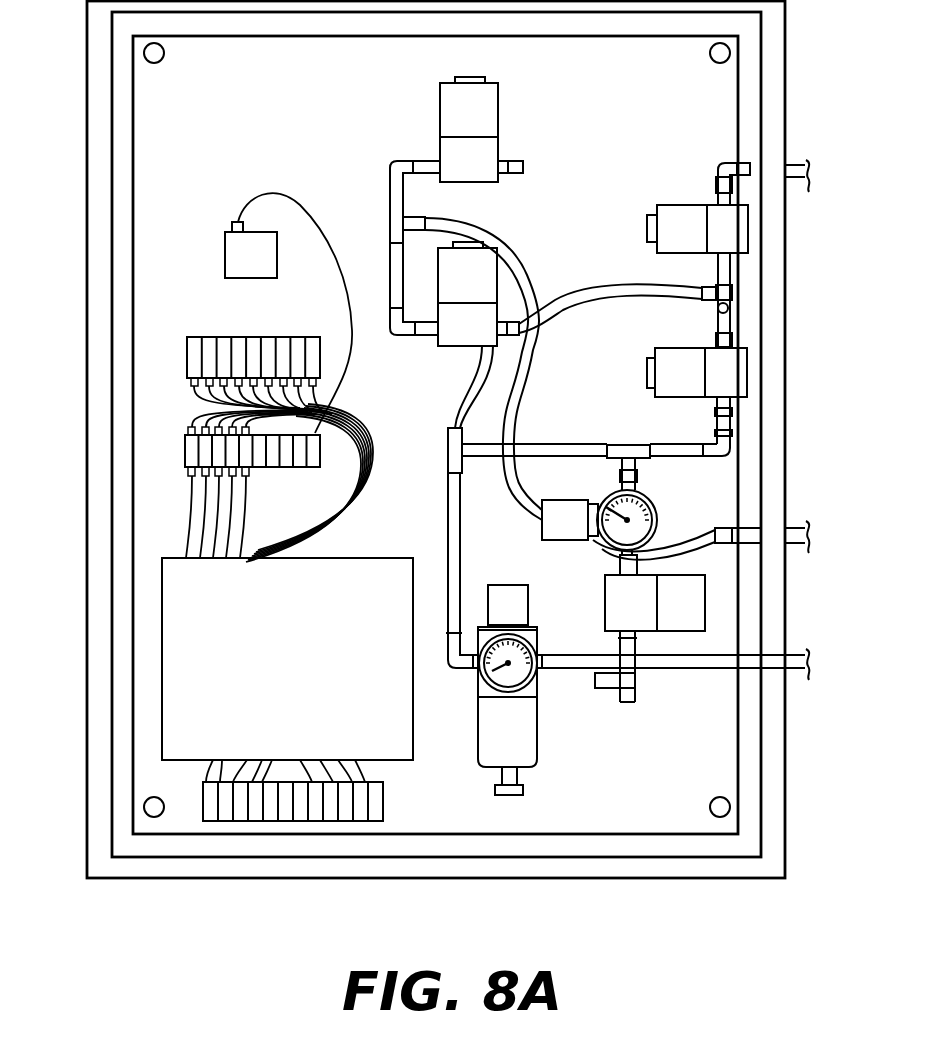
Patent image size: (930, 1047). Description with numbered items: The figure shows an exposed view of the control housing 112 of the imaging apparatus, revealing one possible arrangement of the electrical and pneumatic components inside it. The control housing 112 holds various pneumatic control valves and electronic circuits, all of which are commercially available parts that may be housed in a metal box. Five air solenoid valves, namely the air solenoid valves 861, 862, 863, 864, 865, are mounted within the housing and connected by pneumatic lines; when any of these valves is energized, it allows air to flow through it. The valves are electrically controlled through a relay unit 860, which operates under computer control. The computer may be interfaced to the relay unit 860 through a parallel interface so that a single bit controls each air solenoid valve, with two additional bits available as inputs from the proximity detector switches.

The control housing 112 is at (227, 914).
The relay unit 860 is at (160, 631).
The air solenoid valve 861 is at (490, 118).
The air solenoid valve 862 is at (728, 229).
The air solenoid valve 863 is at (740, 372).
The air solenoid valve 864 is at (478, 270).
The air solenoid valve 865 is at (690, 598).